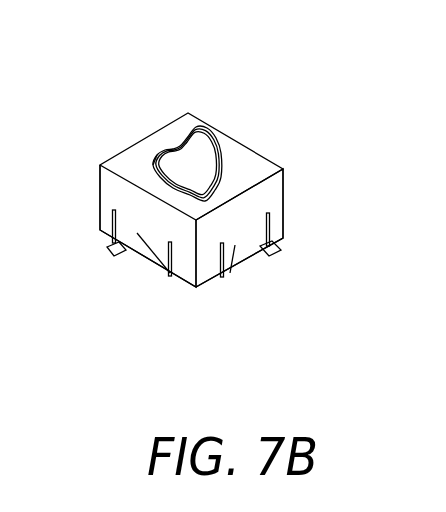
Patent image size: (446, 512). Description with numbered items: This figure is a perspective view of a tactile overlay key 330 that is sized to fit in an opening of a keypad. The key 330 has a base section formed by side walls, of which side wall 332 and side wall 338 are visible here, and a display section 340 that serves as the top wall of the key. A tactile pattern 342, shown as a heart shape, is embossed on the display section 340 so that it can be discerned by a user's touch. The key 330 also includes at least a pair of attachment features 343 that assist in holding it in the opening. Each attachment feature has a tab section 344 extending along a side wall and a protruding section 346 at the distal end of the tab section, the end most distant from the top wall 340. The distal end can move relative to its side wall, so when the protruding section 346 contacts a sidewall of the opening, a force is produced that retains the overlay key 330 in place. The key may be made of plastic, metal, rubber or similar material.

The tactile overlay key 330 is at (248, 83).
The side wall 332 is at (136, 204).
The side wall 338 is at (273, 192).
The display section 340 is at (262, 178).
The tactile pattern 342 is at (162, 153).
The attachment feature 343 is at (113, 256).
The tab section 344 is at (170, 276).
The protruding section 346 is at (168, 279).